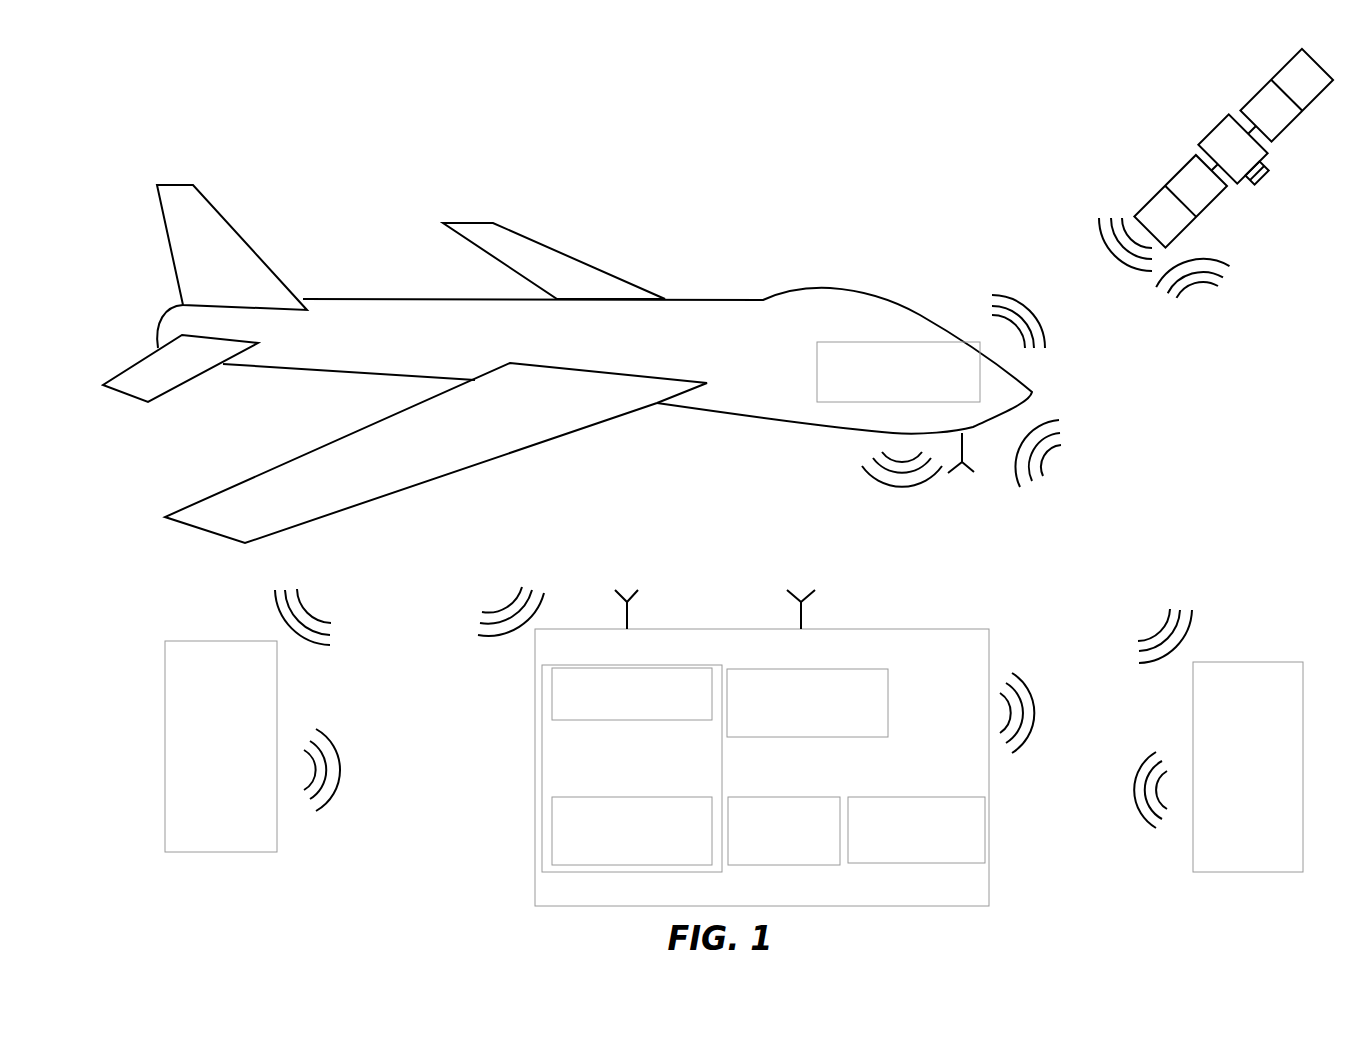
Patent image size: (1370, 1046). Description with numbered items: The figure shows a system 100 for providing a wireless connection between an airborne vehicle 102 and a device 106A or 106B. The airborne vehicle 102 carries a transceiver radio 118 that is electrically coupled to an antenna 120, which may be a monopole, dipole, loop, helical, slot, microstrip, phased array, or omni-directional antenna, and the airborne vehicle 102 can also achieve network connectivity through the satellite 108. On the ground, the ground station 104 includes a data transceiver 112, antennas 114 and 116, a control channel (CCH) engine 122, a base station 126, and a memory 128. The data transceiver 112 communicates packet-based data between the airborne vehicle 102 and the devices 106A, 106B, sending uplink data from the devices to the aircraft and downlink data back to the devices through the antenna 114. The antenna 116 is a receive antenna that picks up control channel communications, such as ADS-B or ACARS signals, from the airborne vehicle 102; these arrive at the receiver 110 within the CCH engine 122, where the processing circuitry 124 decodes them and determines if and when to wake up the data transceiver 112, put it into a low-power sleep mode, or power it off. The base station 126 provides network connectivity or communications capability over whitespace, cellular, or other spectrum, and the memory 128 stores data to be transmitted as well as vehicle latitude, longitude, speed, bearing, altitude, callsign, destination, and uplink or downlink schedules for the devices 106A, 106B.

The system 100 is at (186, 91).
The airborne vehicle 102 is at (363, 299).
The ground station 104 is at (683, 638).
The device 106A is at (202, 651).
The device 106B is at (1230, 672).
The satellite 108 is at (1225, 124).
The receiver 110 is at (596, 677).
The data transceiver 112 is at (863, 682).
The antenna 114 is at (797, 592).
The antenna 116 is at (620, 592).
The transceiver radio 118 is at (868, 350).
The antenna 120 is at (974, 472).
The control channel (CCH) engine 122 is at (720, 677).
The processing circuitry 124 is at (573, 807).
The base station 126 is at (825, 808).
The memory 128 is at (935, 807).